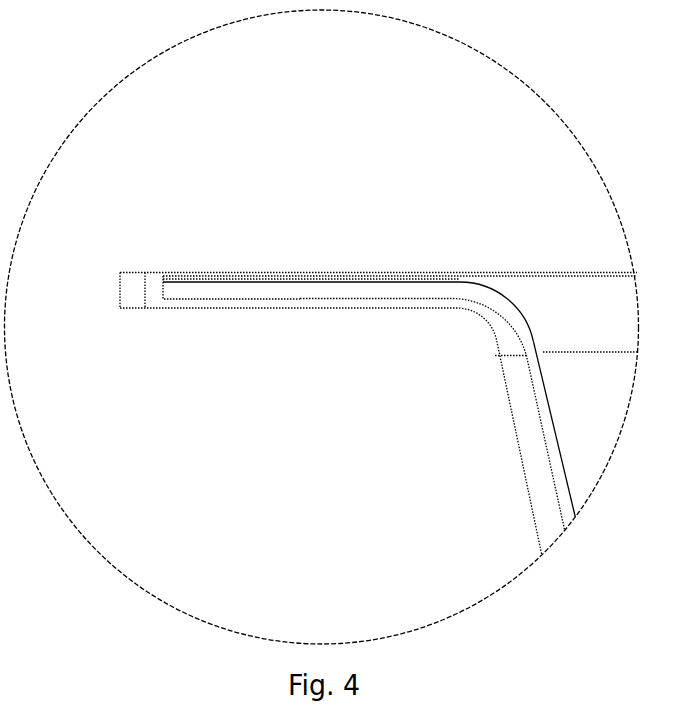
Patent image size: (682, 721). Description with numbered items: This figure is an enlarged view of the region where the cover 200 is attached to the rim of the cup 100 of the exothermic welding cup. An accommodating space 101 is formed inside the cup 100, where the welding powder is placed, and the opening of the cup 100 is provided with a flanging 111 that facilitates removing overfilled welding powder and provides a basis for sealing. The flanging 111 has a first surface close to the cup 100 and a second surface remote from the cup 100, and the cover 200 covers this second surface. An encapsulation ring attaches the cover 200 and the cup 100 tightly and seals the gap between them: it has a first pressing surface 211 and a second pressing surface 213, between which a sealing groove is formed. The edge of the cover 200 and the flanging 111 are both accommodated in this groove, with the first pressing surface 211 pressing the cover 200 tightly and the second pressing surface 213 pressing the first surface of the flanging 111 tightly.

The cup 100 is at (513, 378).
The accommodating space 101 is at (577, 415).
The flanging 111 is at (297, 292).
The cover 200 is at (235, 278).
The first pressing surface 211 is at (175, 275).
The second pressing surface 213 is at (181, 299).